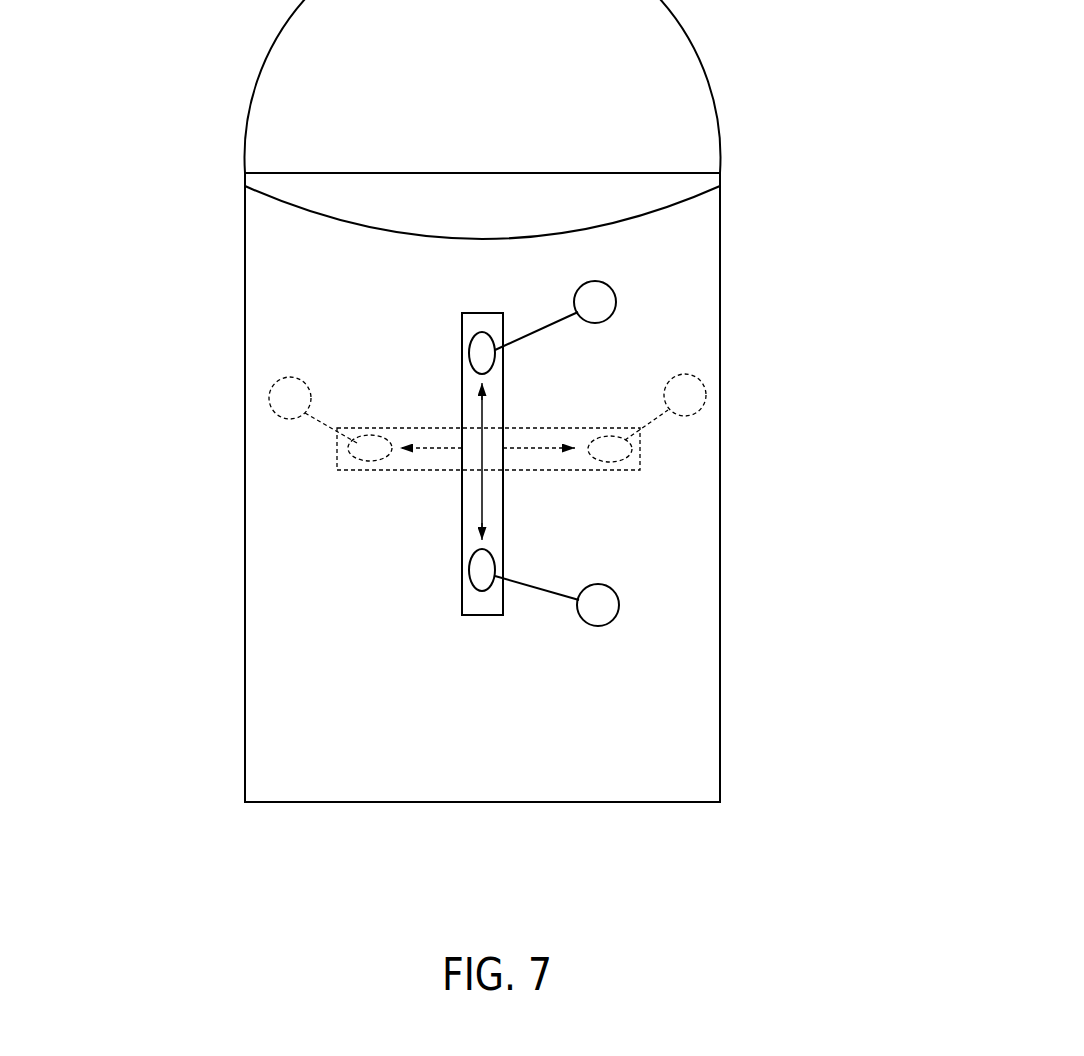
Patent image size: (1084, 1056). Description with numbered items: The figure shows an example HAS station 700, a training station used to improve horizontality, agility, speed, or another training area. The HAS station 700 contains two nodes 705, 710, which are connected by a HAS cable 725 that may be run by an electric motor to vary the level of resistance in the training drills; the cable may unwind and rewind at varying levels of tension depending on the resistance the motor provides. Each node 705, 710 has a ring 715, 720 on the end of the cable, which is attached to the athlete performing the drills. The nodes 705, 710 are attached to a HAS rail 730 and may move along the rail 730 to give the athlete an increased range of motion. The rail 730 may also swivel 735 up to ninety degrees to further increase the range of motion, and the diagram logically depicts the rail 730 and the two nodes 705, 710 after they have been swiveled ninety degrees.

The HAS station 700 is at (483, 802).
The node 705 is at (502, 565).
The node 710 is at (462, 348).
The ring 715 is at (620, 605).
The ring 720 is at (575, 292).
The HAS cable 725 is at (542, 602).
The HAS rail 730 is at (503, 390).
The swivel 735 is at (450, 537).